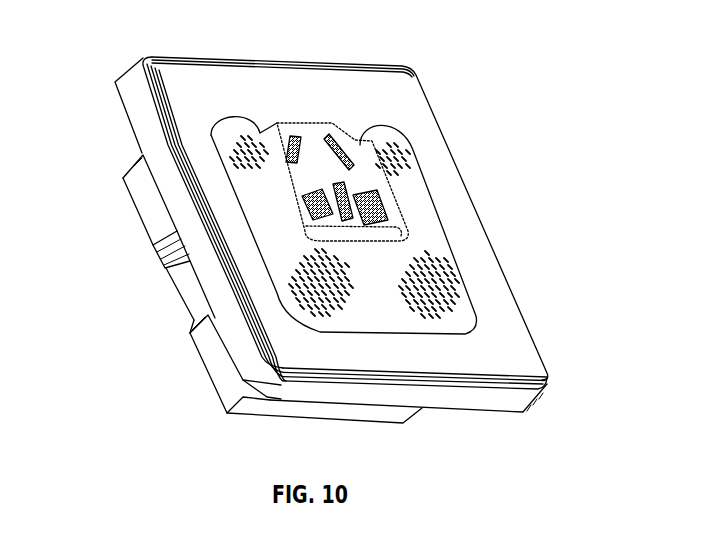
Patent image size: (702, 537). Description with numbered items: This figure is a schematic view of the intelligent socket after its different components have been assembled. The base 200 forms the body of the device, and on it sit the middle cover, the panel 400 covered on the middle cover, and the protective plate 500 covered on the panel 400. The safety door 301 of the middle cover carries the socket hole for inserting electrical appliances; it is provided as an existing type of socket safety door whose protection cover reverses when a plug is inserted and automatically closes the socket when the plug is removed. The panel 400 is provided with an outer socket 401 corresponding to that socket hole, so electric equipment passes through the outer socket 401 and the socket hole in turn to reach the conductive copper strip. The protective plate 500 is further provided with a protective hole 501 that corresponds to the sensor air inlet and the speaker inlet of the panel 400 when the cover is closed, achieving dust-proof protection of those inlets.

The base 200 is at (135, 194).
The safety door 301 is at (292, 172).
The panel 400 is at (412, 68).
The outer socket 401 is at (288, 143).
The protective plate 500 is at (410, 323).
The protective hole 501 is at (460, 277).